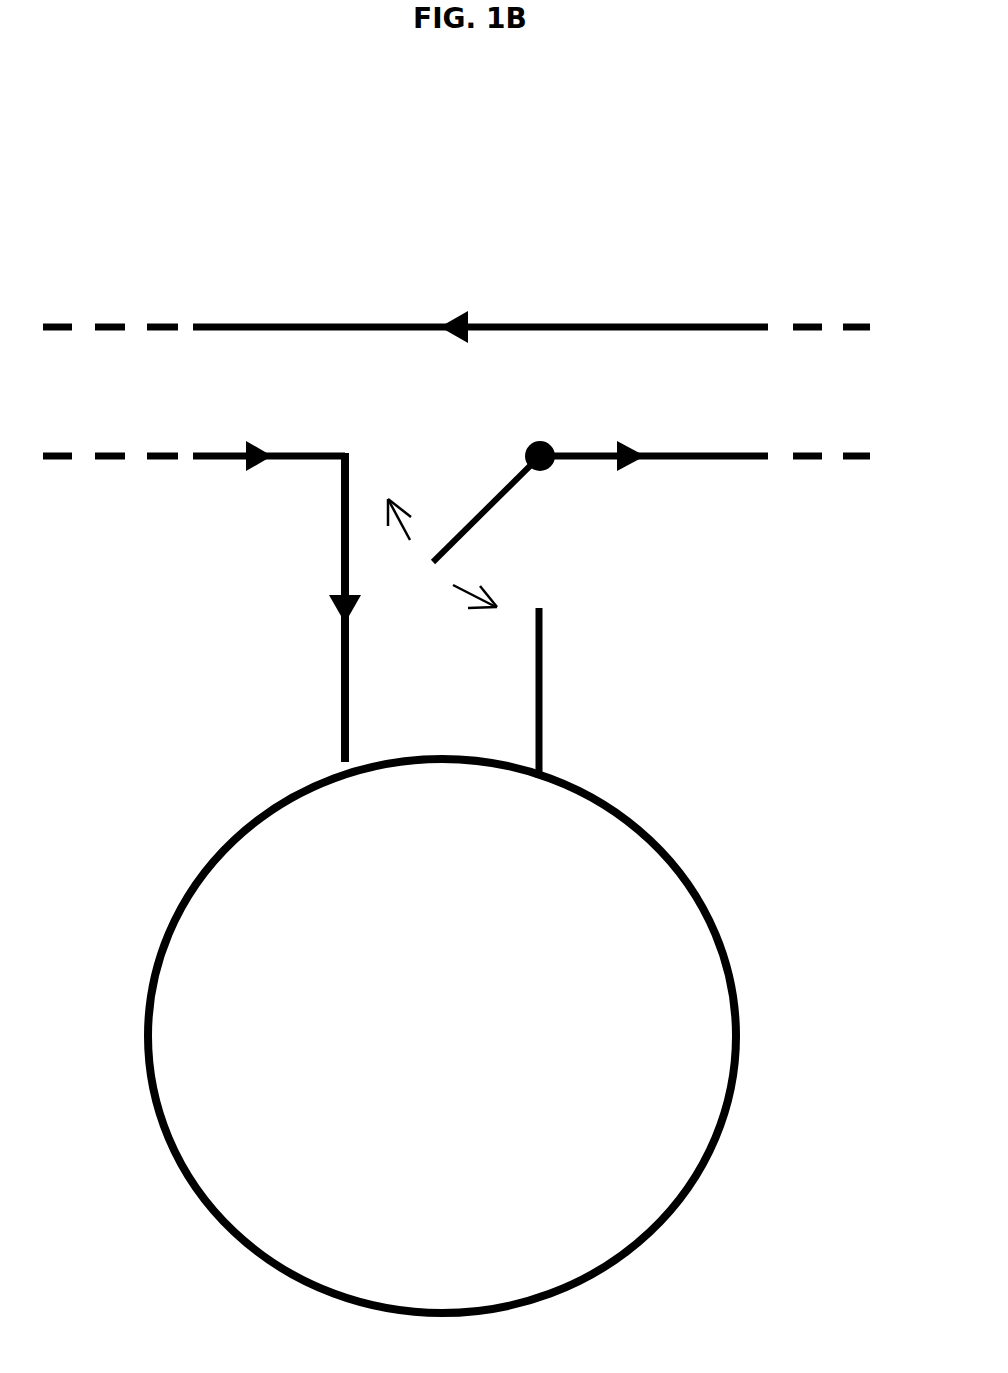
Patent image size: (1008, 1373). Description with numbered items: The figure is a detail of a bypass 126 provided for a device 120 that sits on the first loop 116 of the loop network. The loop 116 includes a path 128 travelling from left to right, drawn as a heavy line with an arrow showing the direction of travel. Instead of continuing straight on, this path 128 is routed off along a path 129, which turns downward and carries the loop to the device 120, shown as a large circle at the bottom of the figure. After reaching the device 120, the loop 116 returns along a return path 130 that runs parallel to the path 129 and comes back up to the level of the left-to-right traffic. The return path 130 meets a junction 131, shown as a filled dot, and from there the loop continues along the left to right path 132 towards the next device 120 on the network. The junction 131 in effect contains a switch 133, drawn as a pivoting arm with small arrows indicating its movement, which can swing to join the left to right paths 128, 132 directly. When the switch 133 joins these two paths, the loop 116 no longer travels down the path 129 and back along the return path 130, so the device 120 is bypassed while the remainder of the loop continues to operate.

The bypass 126 is at (188, 197).
The first loop 116 is at (367, 325).
The path 128 is at (210, 457).
The path 129 is at (345, 564).
The junction 131 is at (548, 441).
The left to right path 132 is at (693, 456).
The switch 133 is at (497, 520).
The return path 130 is at (543, 695).
The device 120 is at (213, 840).